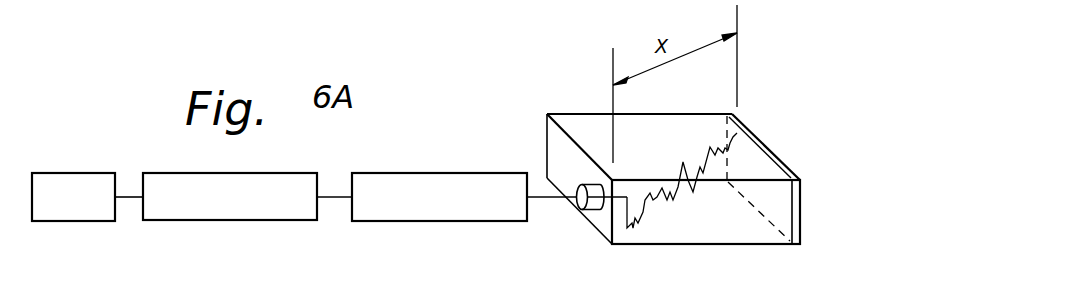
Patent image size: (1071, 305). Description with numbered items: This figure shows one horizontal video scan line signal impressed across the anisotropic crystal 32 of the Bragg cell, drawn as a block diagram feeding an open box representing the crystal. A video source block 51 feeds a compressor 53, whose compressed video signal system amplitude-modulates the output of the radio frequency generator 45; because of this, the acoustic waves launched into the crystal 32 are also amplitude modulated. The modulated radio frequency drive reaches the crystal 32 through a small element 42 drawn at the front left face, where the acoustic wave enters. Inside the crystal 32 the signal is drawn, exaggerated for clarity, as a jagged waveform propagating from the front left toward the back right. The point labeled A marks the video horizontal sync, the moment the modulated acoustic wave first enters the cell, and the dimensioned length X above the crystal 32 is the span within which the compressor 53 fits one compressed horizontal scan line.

The video source 51 is at (73, 221).
The compressor 53 is at (233, 221).
The radio frequency generator 45 is at (430, 221).
The transducer 42 is at (593, 213).
The anisotropic crystal 32 is at (778, 205).
The horizontal line designator A is at (637, 225).